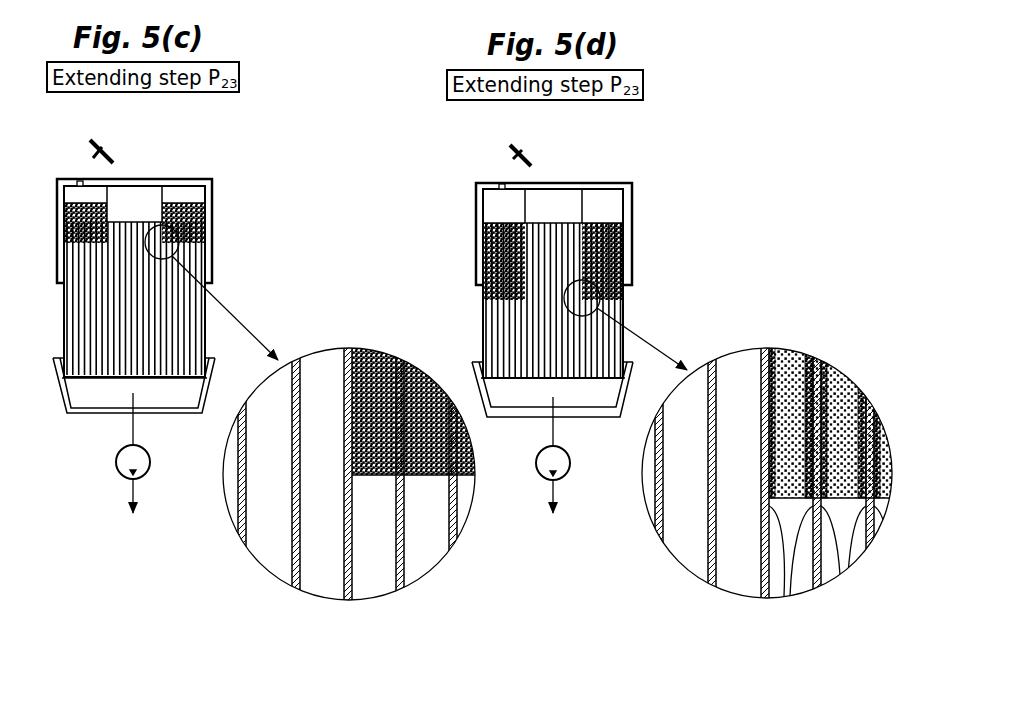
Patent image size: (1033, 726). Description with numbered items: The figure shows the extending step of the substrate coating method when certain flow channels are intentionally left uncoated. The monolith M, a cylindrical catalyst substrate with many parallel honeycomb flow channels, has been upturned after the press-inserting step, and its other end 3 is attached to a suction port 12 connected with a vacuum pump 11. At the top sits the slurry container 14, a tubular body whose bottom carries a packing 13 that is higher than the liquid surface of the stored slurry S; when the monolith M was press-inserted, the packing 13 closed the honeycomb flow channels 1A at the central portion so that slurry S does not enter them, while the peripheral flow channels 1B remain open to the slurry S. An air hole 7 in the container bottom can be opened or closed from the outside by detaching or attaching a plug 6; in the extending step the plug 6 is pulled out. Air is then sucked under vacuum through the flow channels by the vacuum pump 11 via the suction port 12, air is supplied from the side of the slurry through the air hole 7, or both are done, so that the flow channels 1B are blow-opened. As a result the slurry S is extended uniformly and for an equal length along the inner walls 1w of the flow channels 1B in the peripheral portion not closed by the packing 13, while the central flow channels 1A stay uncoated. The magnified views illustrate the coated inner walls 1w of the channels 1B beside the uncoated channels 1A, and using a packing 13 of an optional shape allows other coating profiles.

In FIG. 5C, the honeycomb flow channels at central portion 1A is at (133, 283).
In FIG. 5D, the honeycomb flow channels at central portion 1A is at (555, 265).
In FIG. 5C, the honeycomb flow channels at peripheral portion 1B is at (177, 355).
In FIG. 5D, the honeycomb flow channels at peripheral portion 1B is at (607, 350).
In FIG. 5D, the inner walls of honeycomb flow channels 1w is at (822, 513).
In FIG. 5C, the slurry S is at (83, 215).
In FIG. 5D, the slurry S is at (507, 257).
In FIG. 5C, the monolith M is at (62, 293).
In FIG. 5D, the monolith M is at (477, 307).
In FIG. 5C, the other end of monolith 3 is at (120, 377).
In FIG. 5D, the other end of monolith 3 is at (570, 378).
In FIG. 5C, the plug 6 is at (113, 145).
In FIG. 5D, the plug 6 is at (525, 145).
In FIG. 5C, the air hole 7 is at (82, 181).
In FIG. 5D, the air hole 7 is at (502, 184).
In FIG. 5C, the vacuum pump 11 is at (120, 470).
In FIG. 5D, the vacuum pump 11 is at (567, 475).
In FIG. 5C, the suction port 12 is at (92, 413).
In FIG. 5D, the suction port 12 is at (565, 417).
In FIG. 5C, the packing 13 is at (127, 200).
In FIG. 5D, the packing 13 is at (543, 198).
In FIG. 5C, the slurry container 14 is at (213, 228).
In FIG. 5D, the slurry container 14 is at (571, 214).